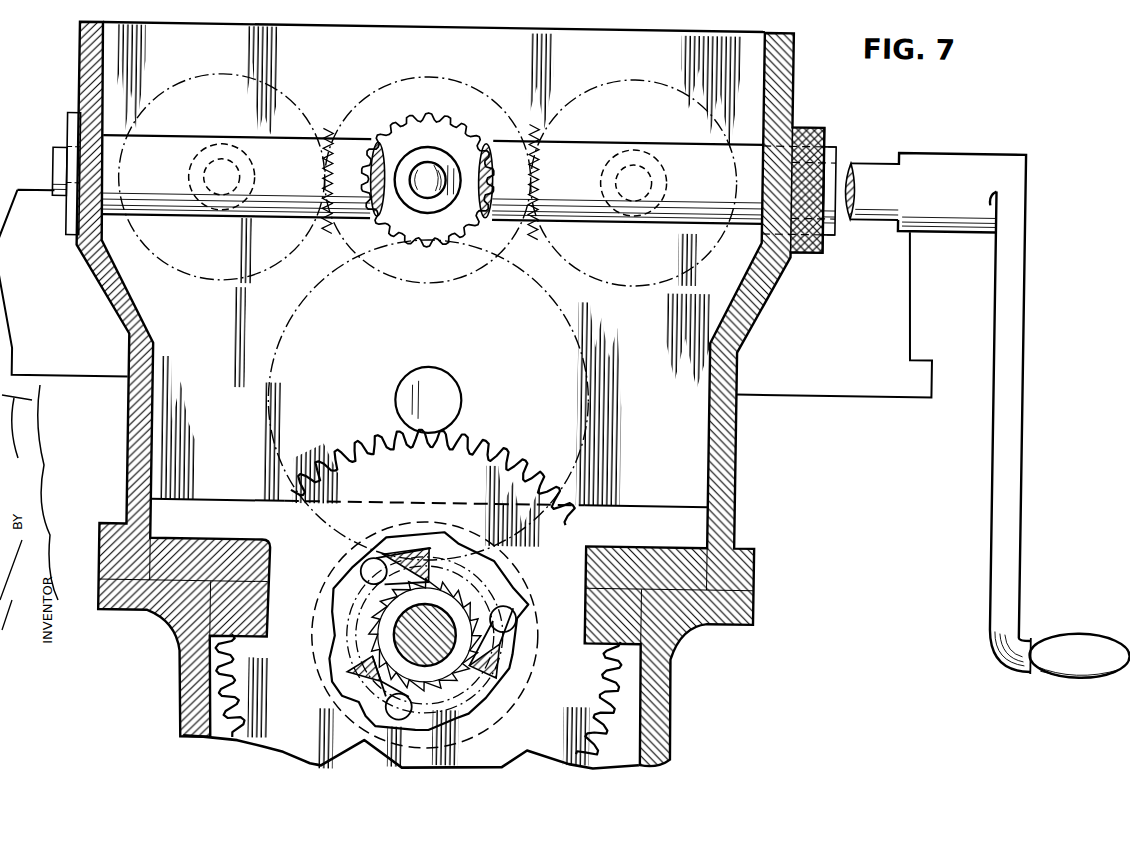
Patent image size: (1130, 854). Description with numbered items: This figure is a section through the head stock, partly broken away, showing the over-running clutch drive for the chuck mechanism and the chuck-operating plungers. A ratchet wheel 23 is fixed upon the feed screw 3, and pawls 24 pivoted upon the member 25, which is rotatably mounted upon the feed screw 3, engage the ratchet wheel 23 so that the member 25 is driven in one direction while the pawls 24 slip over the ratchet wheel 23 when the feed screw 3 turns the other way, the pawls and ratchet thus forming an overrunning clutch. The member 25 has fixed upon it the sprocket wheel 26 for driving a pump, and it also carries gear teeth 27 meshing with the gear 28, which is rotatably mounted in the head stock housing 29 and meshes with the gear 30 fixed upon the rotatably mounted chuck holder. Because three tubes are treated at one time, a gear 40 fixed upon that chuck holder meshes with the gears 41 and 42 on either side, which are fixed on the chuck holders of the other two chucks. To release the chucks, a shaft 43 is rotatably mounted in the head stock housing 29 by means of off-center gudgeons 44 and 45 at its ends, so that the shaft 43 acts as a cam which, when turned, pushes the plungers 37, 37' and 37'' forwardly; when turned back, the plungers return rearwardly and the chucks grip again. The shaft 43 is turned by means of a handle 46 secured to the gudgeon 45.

The feed screw 3 is at (459, 634).
The ratchet wheel 23 is at (387, 620).
The pawls 24 is at (380, 562).
The member 25 is at (394, 738).
The sprocket wheel 26 is at (511, 449).
The gear teeth 27 is at (495, 694).
The gear 28 is at (297, 312).
The head stock housing 29 is at (794, 75).
The gear 30 is at (412, 113).
The plunger 37 is at (427, 168).
The plunger 37' is at (222, 159).
The plunger 37'' is at (642, 166).
The gear 40 is at (484, 91).
The gear 41 is at (292, 93).
The gear 42 is at (661, 80).
The shaft 43 is at (181, 214).
The gudgeon 44 is at (60, 159).
The gudgeon 45 is at (850, 157).
The handle 46 is at (1025, 336).